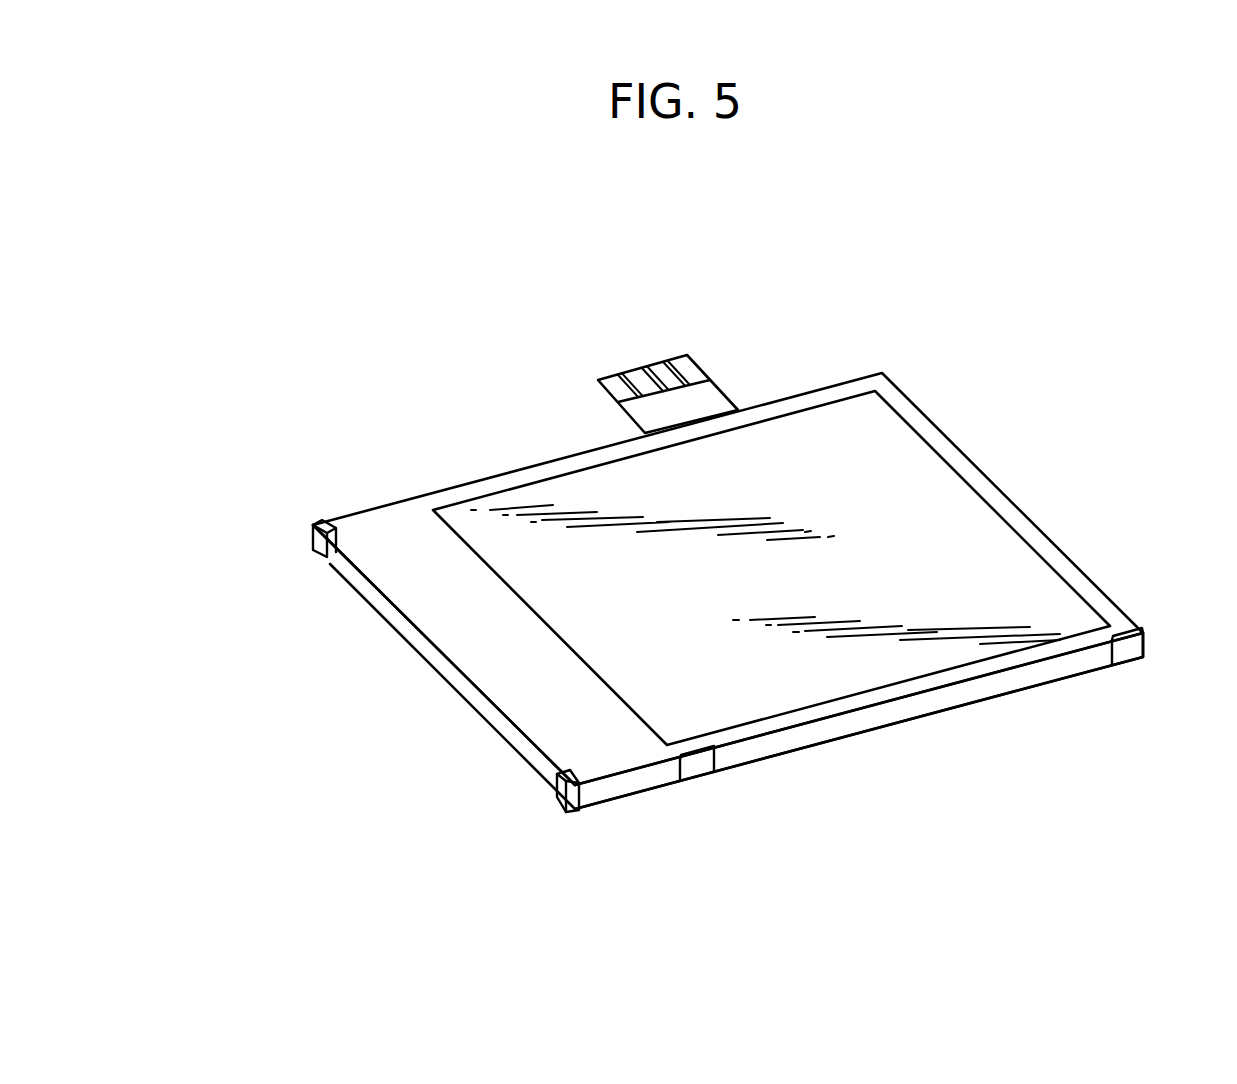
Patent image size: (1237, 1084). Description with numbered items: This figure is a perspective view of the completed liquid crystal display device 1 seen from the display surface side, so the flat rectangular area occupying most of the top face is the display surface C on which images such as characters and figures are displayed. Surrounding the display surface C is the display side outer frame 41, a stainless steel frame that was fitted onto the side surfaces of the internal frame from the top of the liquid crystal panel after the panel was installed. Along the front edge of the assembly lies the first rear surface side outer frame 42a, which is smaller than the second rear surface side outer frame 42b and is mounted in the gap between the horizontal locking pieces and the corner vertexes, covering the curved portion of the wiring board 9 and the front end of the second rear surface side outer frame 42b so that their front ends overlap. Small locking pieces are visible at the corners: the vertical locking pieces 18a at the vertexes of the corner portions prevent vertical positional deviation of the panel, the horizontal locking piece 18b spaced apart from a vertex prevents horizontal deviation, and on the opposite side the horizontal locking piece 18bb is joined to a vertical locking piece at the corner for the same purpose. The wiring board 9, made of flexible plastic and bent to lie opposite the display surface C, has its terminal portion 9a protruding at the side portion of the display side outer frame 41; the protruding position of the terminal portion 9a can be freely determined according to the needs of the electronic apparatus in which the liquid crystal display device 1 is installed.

The liquid crystal display device 1 is at (1036, 423).
The wiring board 9 is at (410, 637).
The terminal portion 9a is at (661, 364).
The display side outer frame 41 is at (395, 533).
The first rear surface side outer frame 42a is at (623, 790).
The second rear surface side outer frame 42b is at (865, 725).
The vertical locking piece 18a is at (313, 542).
The horizontal locking piece 18b is at (707, 778).
The horizontal locking piece 18bb is at (1128, 655).
The display surface C is at (908, 558).